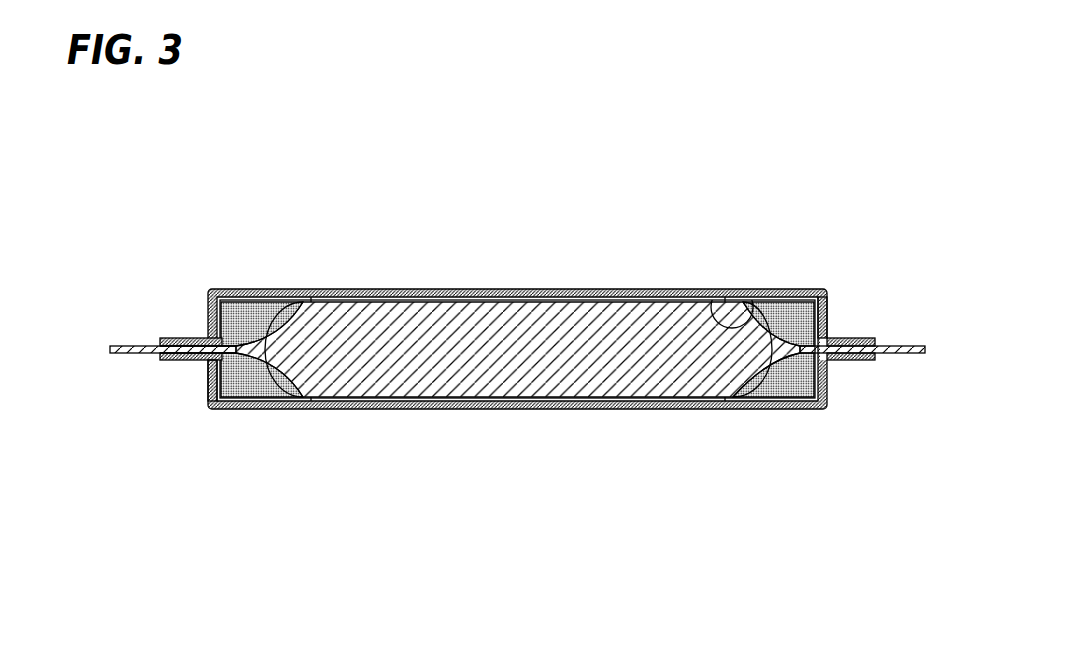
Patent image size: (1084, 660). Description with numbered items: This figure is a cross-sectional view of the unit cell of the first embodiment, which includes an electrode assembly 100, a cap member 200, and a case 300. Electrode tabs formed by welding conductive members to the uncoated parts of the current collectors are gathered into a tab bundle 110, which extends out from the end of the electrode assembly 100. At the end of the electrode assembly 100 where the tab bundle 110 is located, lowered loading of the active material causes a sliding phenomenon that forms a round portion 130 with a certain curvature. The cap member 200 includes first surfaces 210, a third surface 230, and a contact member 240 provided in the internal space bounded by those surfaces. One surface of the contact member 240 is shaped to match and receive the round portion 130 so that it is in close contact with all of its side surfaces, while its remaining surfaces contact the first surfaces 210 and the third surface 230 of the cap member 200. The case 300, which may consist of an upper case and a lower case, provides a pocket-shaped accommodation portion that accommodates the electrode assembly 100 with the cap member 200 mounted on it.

The electrode assembly 100 is at (371, 334).
The tab bundle 110 is at (136, 345).
The round portion 130 is at (716, 299).
The cap member 200 is at (793, 297).
The first surfaces 210 is at (243, 300).
The third surface 230 is at (212, 380).
The contact member 240 is at (818, 311).
The case 300 is at (516, 297).